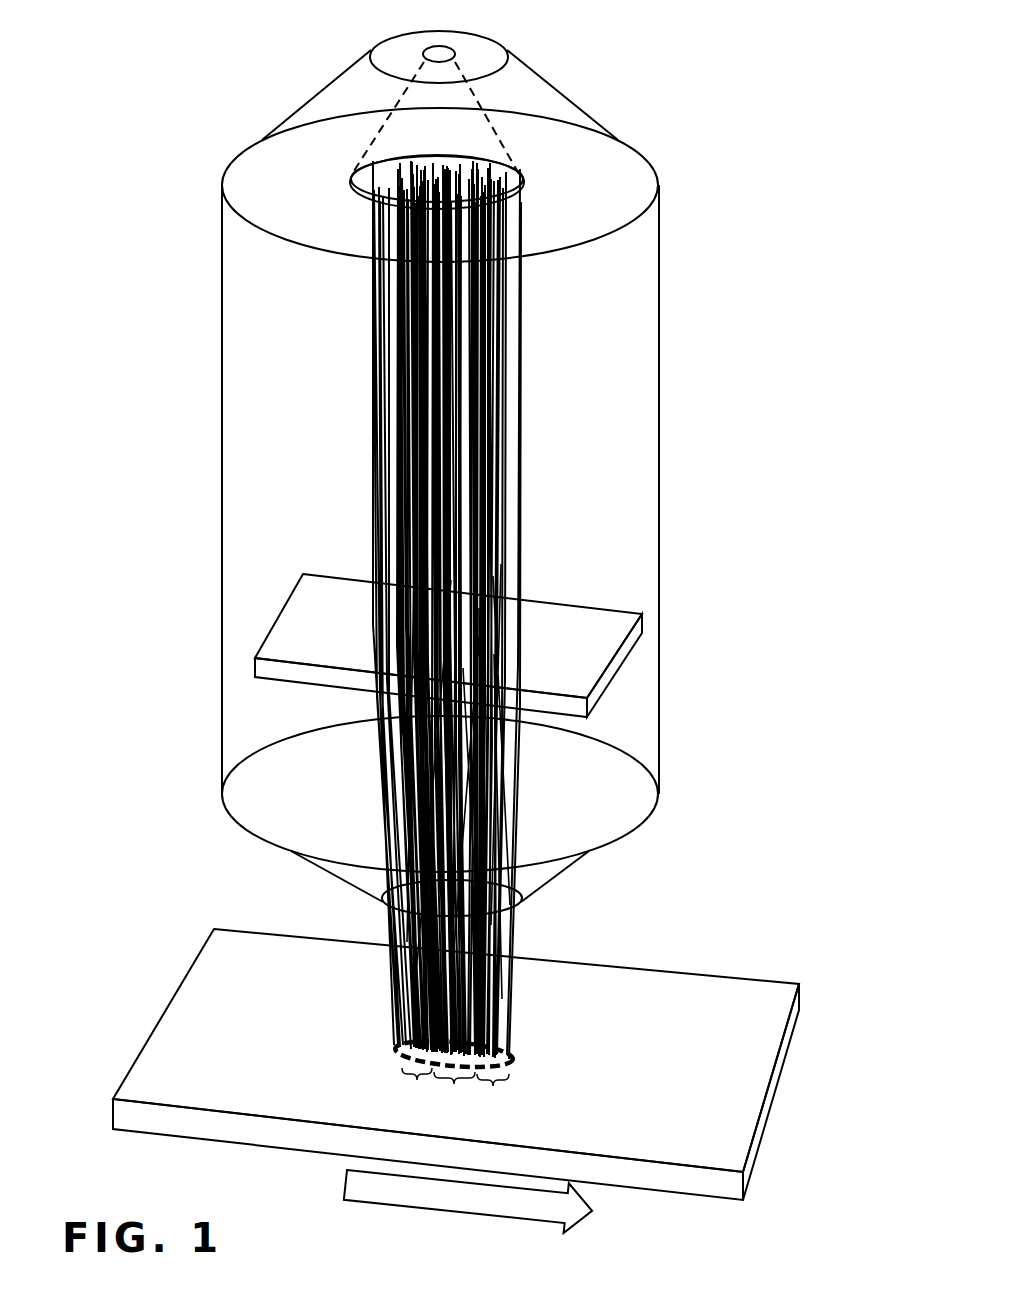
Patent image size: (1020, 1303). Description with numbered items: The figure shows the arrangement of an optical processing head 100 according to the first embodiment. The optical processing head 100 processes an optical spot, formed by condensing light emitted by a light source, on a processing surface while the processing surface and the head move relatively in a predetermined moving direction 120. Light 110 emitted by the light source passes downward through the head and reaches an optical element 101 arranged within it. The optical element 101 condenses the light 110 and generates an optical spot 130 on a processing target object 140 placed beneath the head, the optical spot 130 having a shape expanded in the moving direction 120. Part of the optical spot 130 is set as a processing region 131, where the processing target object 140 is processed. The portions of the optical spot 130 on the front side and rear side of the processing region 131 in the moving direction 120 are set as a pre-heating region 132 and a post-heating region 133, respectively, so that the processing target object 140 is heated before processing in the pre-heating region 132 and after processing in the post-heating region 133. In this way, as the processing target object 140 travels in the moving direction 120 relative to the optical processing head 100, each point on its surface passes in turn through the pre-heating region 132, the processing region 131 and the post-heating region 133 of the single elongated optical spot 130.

The optical processing head 100 is at (236, 92).
The light 110 is at (480, 470).
The optical element 101 is at (595, 643).
The processing target object 140 is at (212, 994).
The optical spot 130 is at (512, 1059).
The processing region 131 is at (453, 1093).
The pre-heating region 132 is at (491, 1094).
The post-heating region 133 is at (408, 1086).
The moving direction 120 is at (343, 1182).